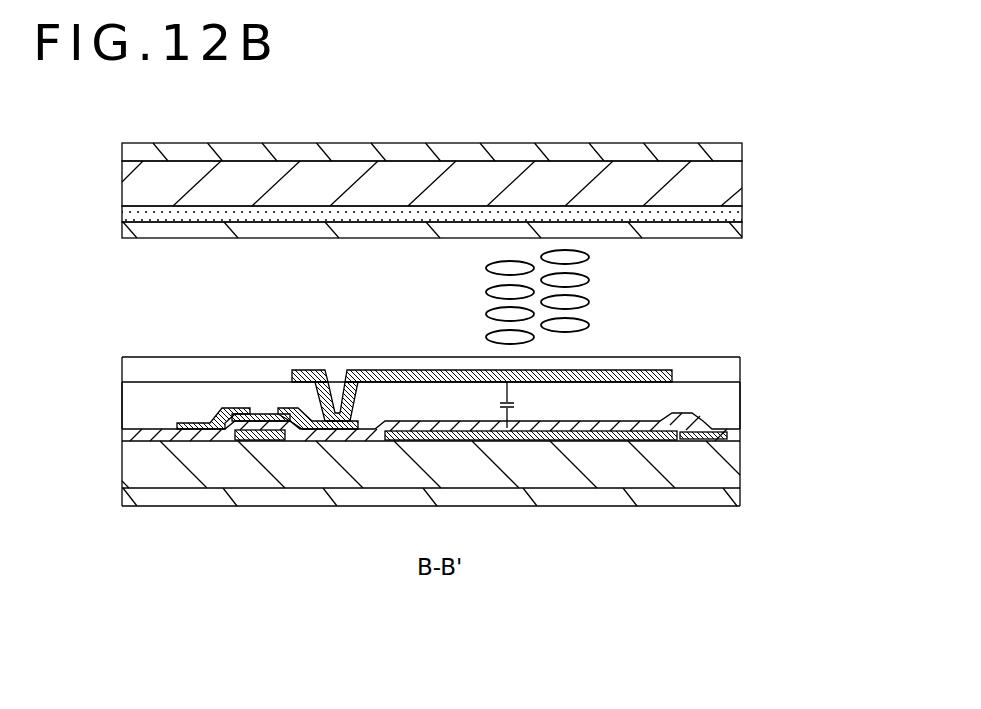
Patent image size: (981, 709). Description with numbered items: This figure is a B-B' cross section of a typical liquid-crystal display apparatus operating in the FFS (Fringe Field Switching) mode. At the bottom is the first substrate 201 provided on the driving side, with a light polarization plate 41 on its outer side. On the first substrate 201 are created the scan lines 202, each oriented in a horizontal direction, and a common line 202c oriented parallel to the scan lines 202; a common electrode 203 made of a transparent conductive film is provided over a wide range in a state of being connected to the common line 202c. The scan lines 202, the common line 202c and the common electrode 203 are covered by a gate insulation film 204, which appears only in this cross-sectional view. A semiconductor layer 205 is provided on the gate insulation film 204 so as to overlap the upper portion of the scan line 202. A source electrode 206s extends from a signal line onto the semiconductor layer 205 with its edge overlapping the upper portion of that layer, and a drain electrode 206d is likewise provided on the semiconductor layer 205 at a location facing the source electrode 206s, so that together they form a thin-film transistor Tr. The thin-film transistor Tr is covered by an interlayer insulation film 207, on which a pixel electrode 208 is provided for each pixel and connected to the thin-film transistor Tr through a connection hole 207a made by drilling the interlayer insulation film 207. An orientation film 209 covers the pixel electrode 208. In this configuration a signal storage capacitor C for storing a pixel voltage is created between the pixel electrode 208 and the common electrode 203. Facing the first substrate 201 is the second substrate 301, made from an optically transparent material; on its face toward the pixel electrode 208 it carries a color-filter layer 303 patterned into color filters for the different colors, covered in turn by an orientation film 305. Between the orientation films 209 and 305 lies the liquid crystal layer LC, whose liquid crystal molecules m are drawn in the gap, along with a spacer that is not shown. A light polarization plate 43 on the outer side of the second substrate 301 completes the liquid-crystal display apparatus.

The light polarization plate 43 is at (505, 143).
The second substrate 301 is at (673, 161).
The color-filter layer 303 is at (742, 214).
The orientation film 305 is at (742, 236).
The liquid crystal molecules m is at (486, 269).
The liquid crystal layer LC is at (673, 268).
The orientation film 209 is at (612, 357).
The pixel electrode 208 is at (658, 357).
The interlayer insulation film 207 is at (742, 392).
The connection hole 207a is at (317, 407).
The signal storage capacitor C is at (515, 405).
The gate insulation film 204 is at (742, 432).
The common electrode 203 is at (552, 442).
The scan line 202 is at (253, 441).
The common line 202c is at (687, 442).
The semiconductor layer 205 is at (296, 442).
The source electrode 206s is at (191, 417).
The drain electrode 206d is at (343, 442).
The thin-film transistor Tr is at (211, 474).
The first substrate 201 is at (742, 466).
The light polarization plate 41 is at (716, 508).